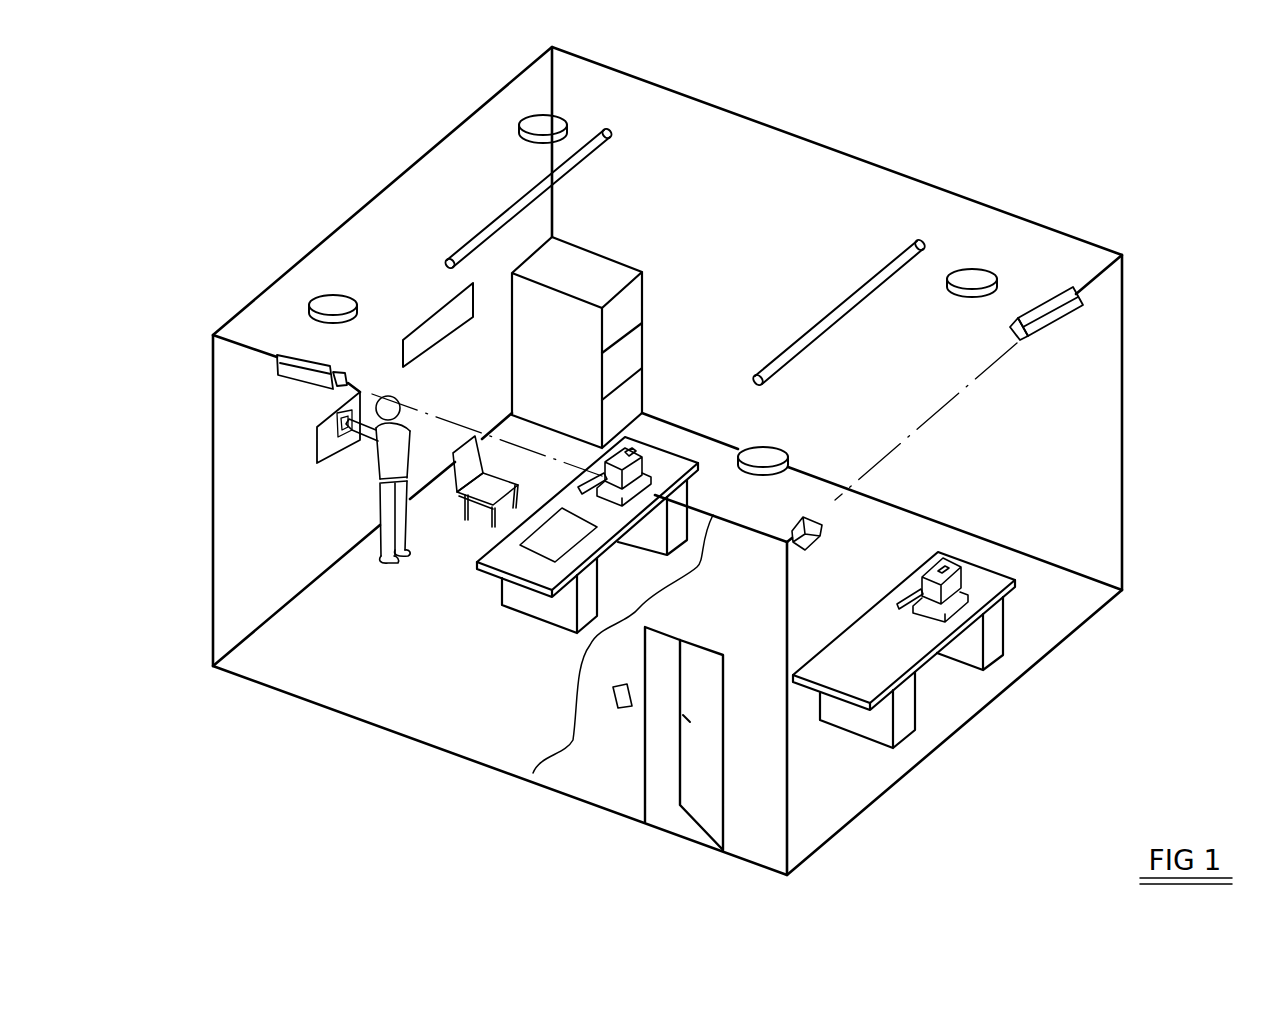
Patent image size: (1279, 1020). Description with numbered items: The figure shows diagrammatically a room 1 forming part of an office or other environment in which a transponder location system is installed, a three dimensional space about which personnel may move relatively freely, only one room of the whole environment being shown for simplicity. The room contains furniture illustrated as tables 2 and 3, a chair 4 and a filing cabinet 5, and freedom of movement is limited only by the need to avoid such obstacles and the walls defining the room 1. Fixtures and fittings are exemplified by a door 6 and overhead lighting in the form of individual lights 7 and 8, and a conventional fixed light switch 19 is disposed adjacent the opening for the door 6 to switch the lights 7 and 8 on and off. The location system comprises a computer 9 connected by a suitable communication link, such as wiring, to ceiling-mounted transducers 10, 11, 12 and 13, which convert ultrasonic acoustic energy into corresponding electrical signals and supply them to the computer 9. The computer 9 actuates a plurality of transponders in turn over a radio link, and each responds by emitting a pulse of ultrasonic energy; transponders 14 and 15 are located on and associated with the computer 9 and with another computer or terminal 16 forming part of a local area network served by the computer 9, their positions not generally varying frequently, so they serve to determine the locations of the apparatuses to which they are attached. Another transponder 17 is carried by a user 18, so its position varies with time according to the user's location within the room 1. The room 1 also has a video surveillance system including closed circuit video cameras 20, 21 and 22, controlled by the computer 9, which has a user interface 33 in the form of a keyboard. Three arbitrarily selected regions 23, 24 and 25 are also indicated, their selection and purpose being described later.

The room 1 is at (1128, 408).
The table 2 is at (483, 577).
The table 3 is at (813, 687).
The chair 4 is at (467, 470).
The filing cabinet 5 is at (625, 310).
The door 6 is at (692, 793).
The light 7 is at (580, 162).
The light 8 is at (877, 277).
The computer 9 is at (953, 585).
The ceiling-mounted transducer 10 is at (333, 297).
The ceiling-mounted transducer 11 is at (541, 124).
The ceiling-mounted transducer 12 is at (982, 278).
The ceiling-mounted transducer 13 is at (765, 458).
The transponder 14 is at (947, 550).
The transponder 15 is at (627, 450).
The computer or terminal 16 is at (643, 475).
The transponder 17 is at (317, 443).
The user 18 is at (383, 463).
The fixed light switch 19 is at (628, 712).
The closed circuit video camera 20 is at (812, 542).
The closed circuit video camera 21 is at (277, 358).
The closed circuit video camera 22 is at (1077, 310).
The region 23 is at (332, 428).
The region 24 is at (443, 325).
The region 25 is at (547, 545).
The user interface 33 is at (907, 598).